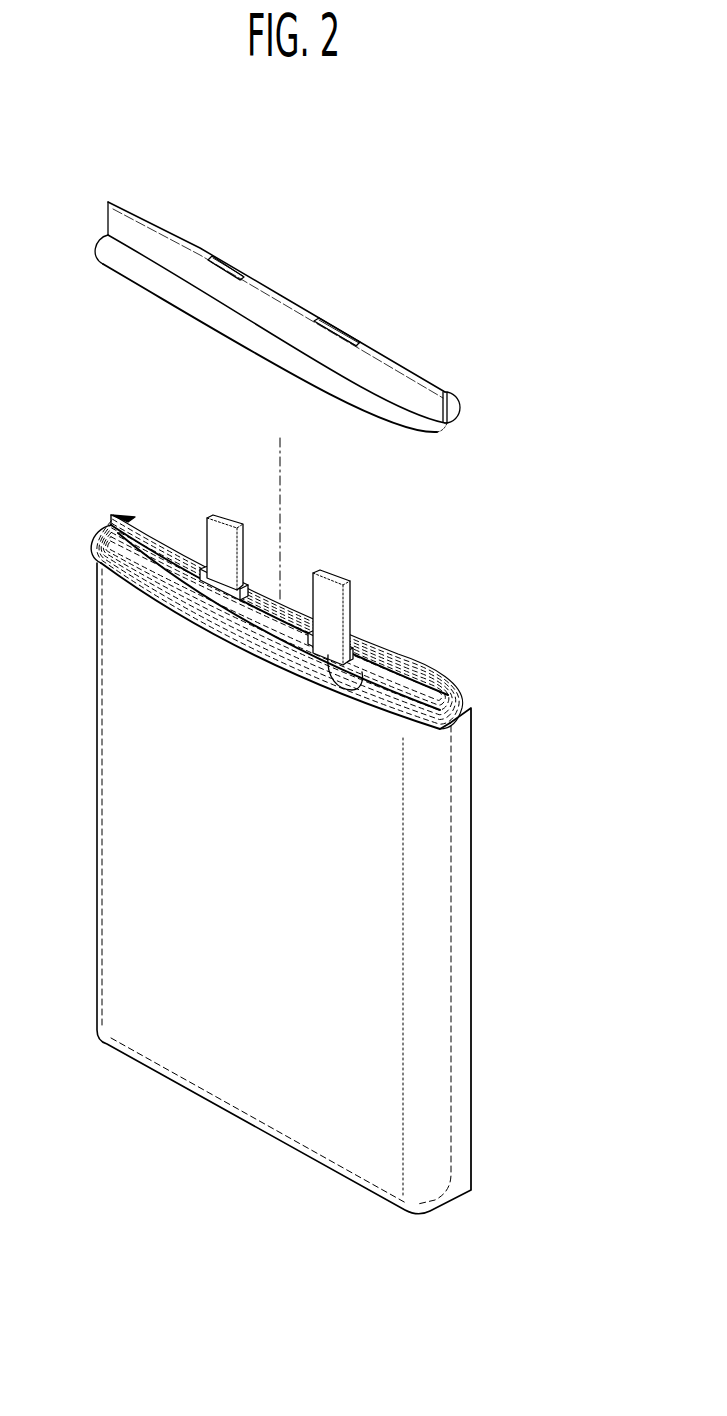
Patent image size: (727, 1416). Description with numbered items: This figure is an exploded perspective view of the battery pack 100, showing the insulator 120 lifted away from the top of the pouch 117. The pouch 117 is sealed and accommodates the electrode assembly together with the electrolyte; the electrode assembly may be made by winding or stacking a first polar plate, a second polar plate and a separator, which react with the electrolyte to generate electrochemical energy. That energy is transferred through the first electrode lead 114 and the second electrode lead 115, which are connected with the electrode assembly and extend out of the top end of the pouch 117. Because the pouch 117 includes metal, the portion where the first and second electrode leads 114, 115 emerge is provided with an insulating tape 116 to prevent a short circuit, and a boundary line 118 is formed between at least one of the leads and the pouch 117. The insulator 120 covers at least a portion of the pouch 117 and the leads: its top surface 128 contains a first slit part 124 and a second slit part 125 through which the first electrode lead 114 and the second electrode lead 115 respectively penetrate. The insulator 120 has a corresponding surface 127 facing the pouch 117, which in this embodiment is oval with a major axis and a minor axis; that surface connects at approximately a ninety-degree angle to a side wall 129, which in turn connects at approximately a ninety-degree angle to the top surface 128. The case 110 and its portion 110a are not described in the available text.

The battery pack 100 is at (100, 124).
The case 110 is at (498, 732).
The folded portion of case 110a is at (452, 945).
The first electrode lead 114 is at (218, 535).
The second electrode lead 115 is at (333, 597).
The insulating tape 116 is at (160, 522).
The pouch 117 is at (462, 838).
The boundary line 118 is at (352, 690).
The insulator 120 is at (447, 235).
The first slit part 124 is at (233, 262).
The second slit part 125 is at (333, 321).
The corresponding surface 127 is at (380, 418).
The top surface 128 is at (362, 336).
The side wall 129 is at (444, 386).